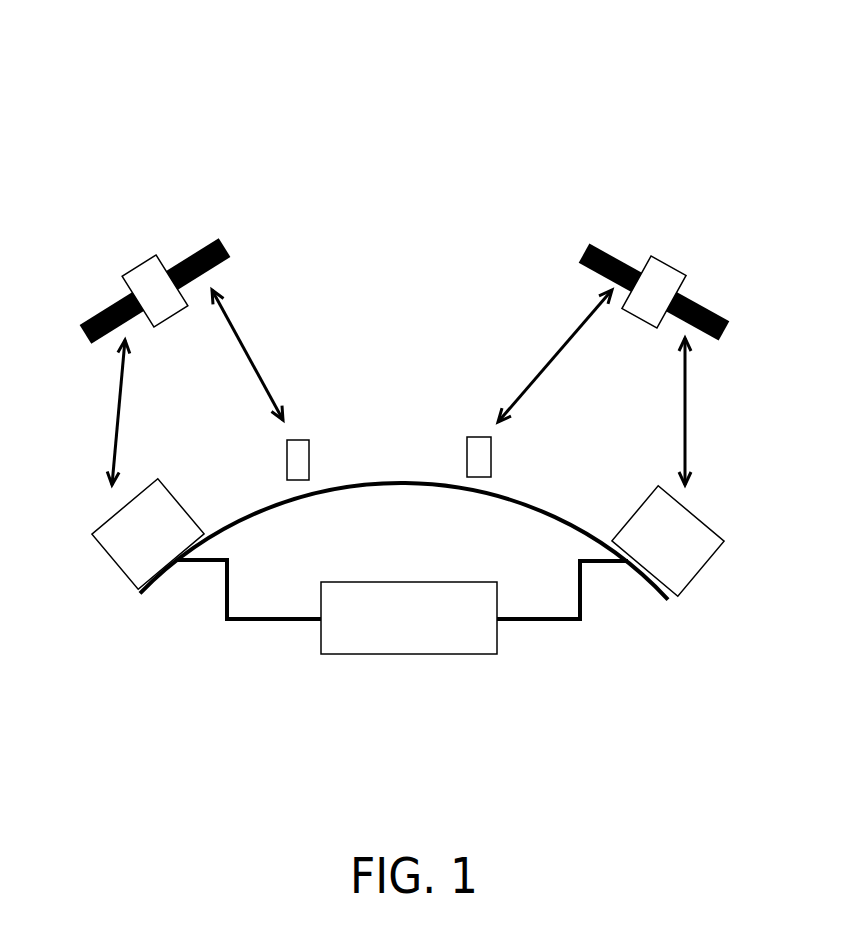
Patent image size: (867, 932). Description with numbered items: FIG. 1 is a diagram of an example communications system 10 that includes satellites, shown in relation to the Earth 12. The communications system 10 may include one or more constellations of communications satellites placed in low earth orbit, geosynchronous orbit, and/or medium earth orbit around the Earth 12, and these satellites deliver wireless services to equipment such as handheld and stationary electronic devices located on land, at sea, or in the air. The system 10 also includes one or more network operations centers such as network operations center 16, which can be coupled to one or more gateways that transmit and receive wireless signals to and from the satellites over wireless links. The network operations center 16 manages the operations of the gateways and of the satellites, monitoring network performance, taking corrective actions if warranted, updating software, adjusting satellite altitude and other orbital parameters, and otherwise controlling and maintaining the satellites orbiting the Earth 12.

The system 10 is at (357, 114).
The Earth 12 is at (250, 513).
The network operations center 16 is at (470, 655).